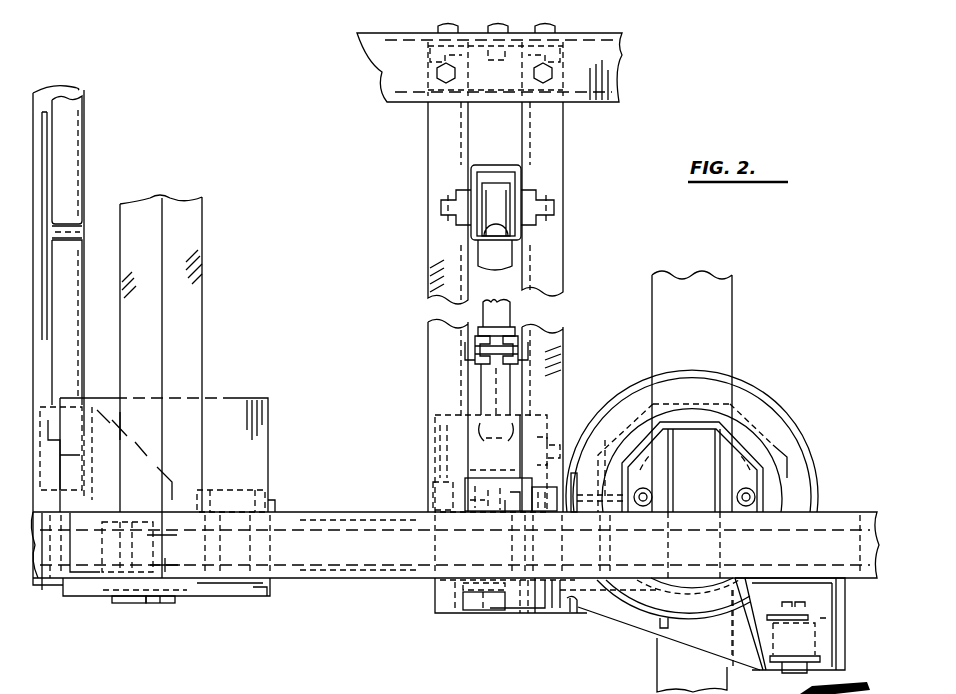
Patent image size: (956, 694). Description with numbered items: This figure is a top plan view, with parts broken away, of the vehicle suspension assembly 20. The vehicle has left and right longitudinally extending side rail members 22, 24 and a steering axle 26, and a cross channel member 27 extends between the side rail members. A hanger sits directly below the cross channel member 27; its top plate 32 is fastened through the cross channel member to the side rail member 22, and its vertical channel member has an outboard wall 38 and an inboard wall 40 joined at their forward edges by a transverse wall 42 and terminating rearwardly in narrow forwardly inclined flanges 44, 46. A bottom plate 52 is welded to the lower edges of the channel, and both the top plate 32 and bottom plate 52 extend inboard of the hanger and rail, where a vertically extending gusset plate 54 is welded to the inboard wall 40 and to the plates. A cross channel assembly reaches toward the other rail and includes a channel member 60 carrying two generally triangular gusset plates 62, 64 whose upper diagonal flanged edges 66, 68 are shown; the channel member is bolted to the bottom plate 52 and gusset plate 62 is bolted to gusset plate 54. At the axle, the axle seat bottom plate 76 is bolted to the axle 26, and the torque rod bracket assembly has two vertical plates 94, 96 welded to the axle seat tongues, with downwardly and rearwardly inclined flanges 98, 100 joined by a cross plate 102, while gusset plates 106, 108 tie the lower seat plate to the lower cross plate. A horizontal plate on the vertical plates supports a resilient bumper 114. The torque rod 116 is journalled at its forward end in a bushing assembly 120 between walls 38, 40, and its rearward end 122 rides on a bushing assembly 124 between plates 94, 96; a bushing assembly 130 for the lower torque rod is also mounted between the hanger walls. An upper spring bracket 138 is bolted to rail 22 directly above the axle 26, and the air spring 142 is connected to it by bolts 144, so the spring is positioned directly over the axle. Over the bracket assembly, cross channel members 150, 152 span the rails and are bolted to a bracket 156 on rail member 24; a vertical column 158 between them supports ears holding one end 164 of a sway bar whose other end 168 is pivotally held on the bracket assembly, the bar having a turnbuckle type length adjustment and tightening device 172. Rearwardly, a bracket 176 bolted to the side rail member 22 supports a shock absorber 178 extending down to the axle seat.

The suspension assembly 20 is at (288, 203).
The left side rail member 22 is at (330, 512).
The right side rail member 24 is at (388, 80).
The steering axle 26 is at (730, 329).
The cross channel member 27 is at (196, 358).
The top plate 32 is at (270, 410).
The outboard wall 38 is at (235, 582).
The inboard wall 40 is at (216, 505).
The transverse wall 42 is at (66, 560).
The forwardly inclined flange 44 is at (255, 600).
The forwardly inclined flange 46 is at (272, 512).
The bottom plate 52 is at (120, 438).
The gusset plate 54 is at (90, 478).
The channel member 60 is at (80, 240).
The gusset plate 62 is at (82, 346).
The gusset plate 64 is at (83, 150).
The upper diagonal flanged edge 66 is at (67, 281).
The upper diagonal flanged edge 68 is at (67, 113).
The bottom plate 76 is at (643, 627).
The vertical plate 94 is at (432, 592).
The vertical plate 96 is at (464, 496).
The inclined flange 98 is at (578, 615).
The inclined flange 100 is at (587, 467).
The cross plate 102 is at (553, 605).
The gusset plate 106 is at (598, 615).
The gusset plate 108 is at (605, 440).
The resilient bumper 114 is at (480, 602).
The torque rod 116 is at (355, 570).
The bushing assembly 120 is at (122, 603).
The rearward end 122 is at (452, 596).
The bushing assembly 124 is at (510, 614).
The bushing assembly 130 is at (172, 604).
The upper spring bracket 138 is at (720, 470).
The air spring 142 is at (798, 452).
The bolts 144 is at (740, 496).
The cross channel member 150 is at (438, 335).
The cross channel member 152 is at (548, 333).
The bracket 156 is at (560, 90).
The vertical column 158 is at (492, 166).
The end of sway bar 164 is at (503, 195).
The other end of sway bar 168 is at (487, 452).
The length adjustment and tightening device 172 is at (507, 305).
The bracket 176 is at (822, 603).
The shock absorber 178 is at (817, 628).